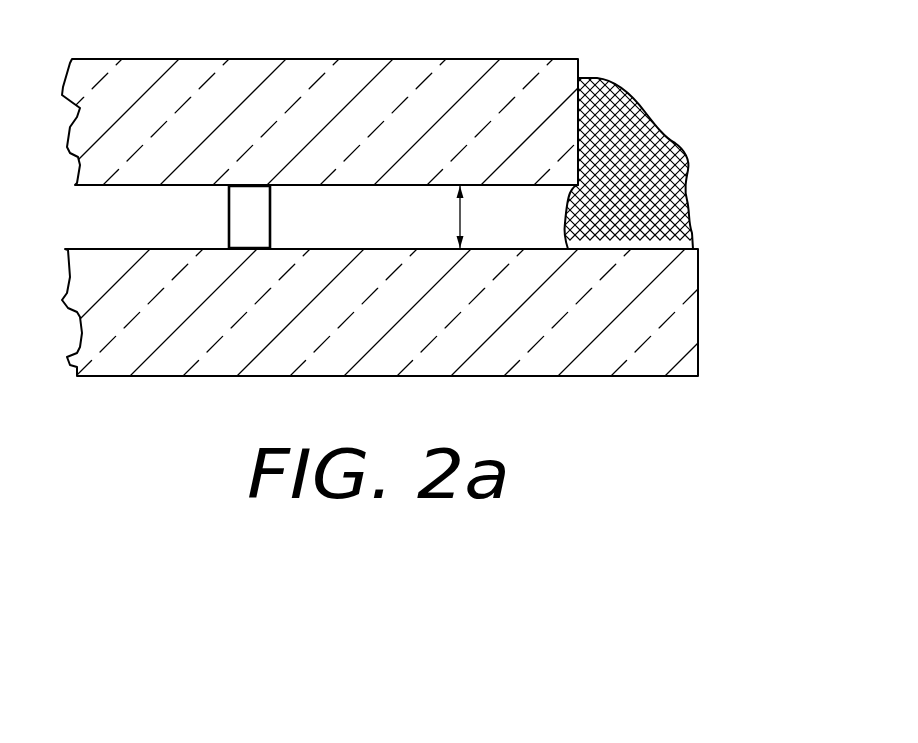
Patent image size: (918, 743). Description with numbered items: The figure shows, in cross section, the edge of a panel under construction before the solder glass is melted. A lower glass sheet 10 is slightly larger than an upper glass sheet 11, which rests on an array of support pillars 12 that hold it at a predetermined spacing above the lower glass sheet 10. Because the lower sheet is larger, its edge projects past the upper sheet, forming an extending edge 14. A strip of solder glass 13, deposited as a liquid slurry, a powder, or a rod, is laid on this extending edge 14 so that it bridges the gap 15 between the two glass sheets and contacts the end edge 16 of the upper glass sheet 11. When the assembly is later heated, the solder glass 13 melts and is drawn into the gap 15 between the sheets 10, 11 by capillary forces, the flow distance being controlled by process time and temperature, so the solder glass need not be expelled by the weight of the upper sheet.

The lower glass sheet 10 is at (670, 337).
The upper glass sheet 11 is at (455, 90).
The support pillar 12 is at (242, 210).
The strip of solder glass 13 is at (632, 207).
The extending edge 14 is at (610, 249).
The gap 15 is at (429, 217).
The end edge 16 is at (590, 68).